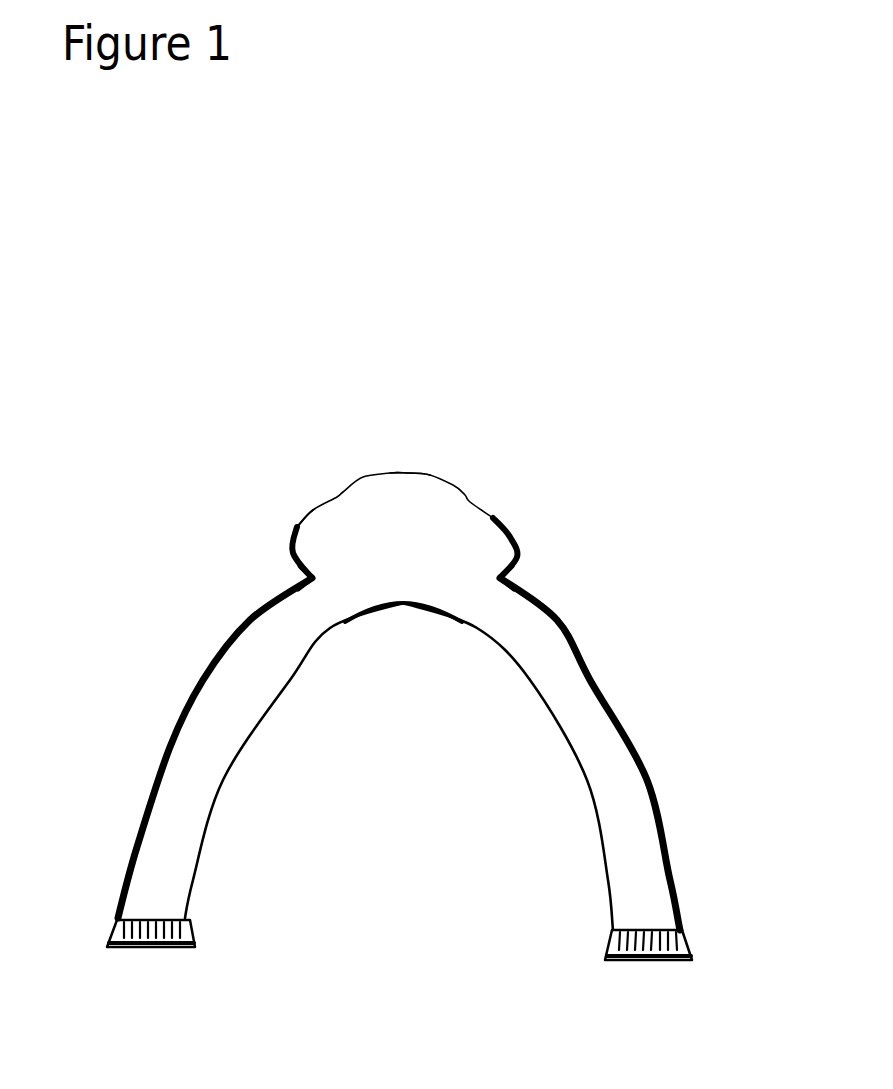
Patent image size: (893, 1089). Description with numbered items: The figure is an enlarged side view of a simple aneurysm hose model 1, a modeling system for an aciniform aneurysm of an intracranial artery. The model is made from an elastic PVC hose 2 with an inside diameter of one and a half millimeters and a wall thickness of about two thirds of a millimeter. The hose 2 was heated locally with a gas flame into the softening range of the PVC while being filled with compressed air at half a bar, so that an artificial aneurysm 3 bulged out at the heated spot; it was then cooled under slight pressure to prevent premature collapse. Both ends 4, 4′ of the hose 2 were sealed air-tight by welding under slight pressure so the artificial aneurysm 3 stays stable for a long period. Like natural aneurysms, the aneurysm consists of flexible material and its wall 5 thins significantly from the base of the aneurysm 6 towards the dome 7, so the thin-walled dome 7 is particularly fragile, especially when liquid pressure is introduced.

The aneurysm hose model 1 is at (717, 327).
The PVC hose 2 is at (633, 737).
The artificial aneurysm 3 is at (404, 525).
The end of hose 4 is at (123, 957).
The end of hose 4′ is at (605, 960).
The wall 5 is at (297, 527).
The base of the aneurysm 6 is at (310, 577).
The dome 7 is at (407, 472).